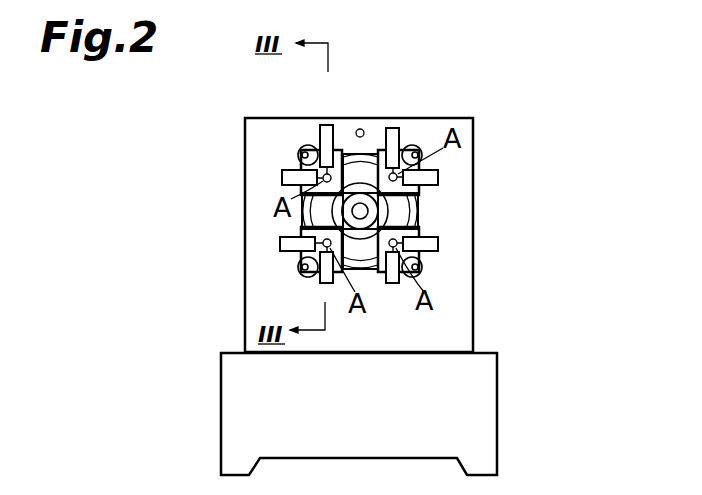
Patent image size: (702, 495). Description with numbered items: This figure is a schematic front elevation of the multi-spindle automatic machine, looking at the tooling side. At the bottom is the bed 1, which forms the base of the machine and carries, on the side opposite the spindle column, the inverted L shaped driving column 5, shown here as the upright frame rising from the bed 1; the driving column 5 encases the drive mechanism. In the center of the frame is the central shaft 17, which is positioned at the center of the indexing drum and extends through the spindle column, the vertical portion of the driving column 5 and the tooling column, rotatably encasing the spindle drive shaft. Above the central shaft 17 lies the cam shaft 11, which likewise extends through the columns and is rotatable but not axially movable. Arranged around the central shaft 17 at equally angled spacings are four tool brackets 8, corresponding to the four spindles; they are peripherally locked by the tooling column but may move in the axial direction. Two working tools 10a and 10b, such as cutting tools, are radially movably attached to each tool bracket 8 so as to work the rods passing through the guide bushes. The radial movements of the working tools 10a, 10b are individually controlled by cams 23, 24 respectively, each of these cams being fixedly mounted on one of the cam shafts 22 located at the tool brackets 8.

The bed 1 is at (497, 402).
The driving column 5 is at (474, 330).
The tool bracket 8 is at (300, 188).
The working tool 10a is at (328, 125).
The working tool 10b is at (392, 128).
The cam shaft 11 is at (362, 129).
The central shaft 17 is at (364, 211).
The cam shaft 22 is at (298, 152).
The cam 23 is at (360, 203).
The cam 24 is at (359, 209).